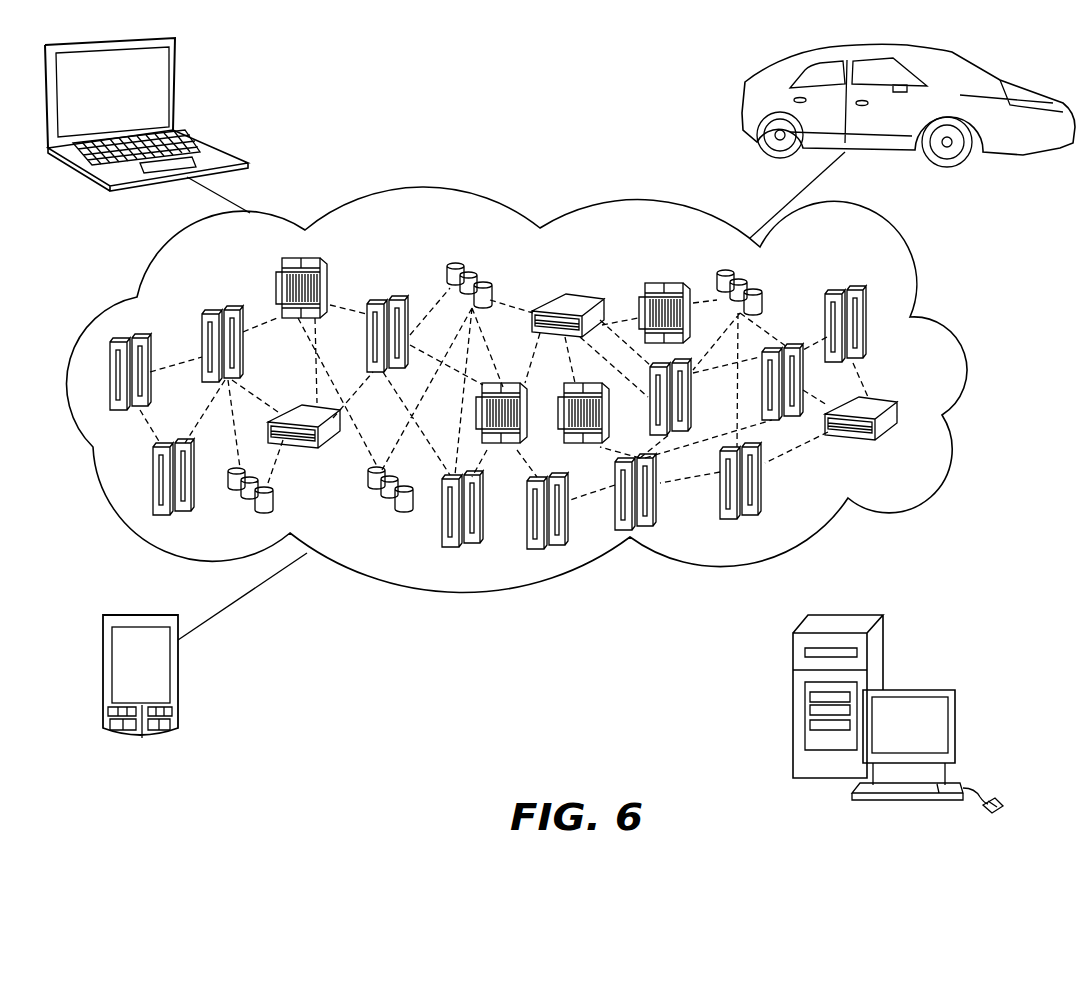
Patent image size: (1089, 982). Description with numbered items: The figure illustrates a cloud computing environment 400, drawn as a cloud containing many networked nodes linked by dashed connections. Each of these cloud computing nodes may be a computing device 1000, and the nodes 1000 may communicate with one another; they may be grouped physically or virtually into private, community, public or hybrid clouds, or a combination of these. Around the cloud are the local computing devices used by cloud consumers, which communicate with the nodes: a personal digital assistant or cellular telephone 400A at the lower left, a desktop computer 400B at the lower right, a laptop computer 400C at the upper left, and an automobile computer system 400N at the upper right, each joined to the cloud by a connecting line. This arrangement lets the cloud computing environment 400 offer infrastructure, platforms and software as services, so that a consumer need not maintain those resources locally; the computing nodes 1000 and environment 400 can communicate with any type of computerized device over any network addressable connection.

The cloud computing environment 400 is at (947, 347).
The computing device 1000 is at (900, 436).
The laptop computer 400C is at (163, 93).
The automobile computer system 400N is at (748, 110).
The cellular telephone 400A is at (162, 682).
The desktop computer 400B is at (950, 725).